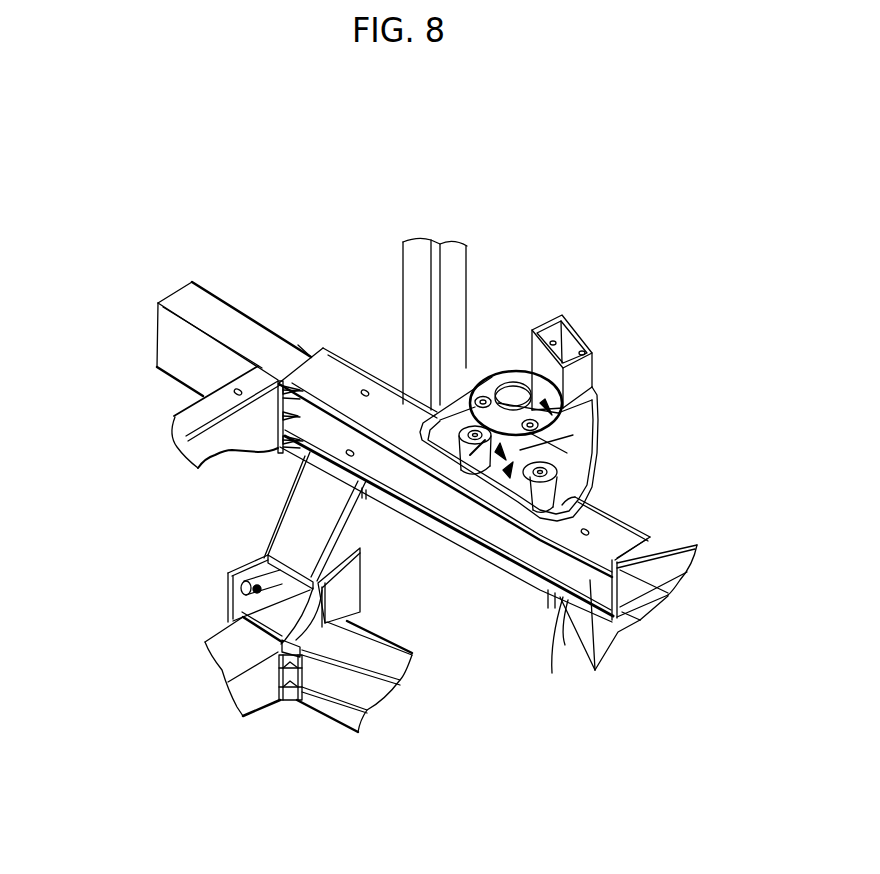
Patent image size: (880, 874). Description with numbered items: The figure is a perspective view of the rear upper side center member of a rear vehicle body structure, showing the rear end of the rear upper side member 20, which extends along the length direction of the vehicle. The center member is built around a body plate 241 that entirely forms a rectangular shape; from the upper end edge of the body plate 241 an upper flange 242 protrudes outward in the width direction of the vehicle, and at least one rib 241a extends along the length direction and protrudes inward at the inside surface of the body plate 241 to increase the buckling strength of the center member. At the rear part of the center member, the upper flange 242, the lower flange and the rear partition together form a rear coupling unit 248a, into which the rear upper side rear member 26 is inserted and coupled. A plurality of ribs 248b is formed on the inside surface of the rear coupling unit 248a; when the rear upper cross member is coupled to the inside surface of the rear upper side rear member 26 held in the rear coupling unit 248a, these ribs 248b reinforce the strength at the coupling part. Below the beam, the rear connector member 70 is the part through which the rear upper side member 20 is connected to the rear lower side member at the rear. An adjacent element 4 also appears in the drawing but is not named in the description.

The floor frame member 4 is at (190, 413).
The rear upper side member 20 is at (489, 541).
The rear upper side rear member 26 is at (178, 292).
The rear connector member 70 is at (298, 537).
The body plate 241 is at (540, 591).
The rib 241a is at (556, 645).
The upper flange 242 is at (616, 530).
The rear coupling unit 248a is at (316, 357).
The ribs 248b is at (280, 384).